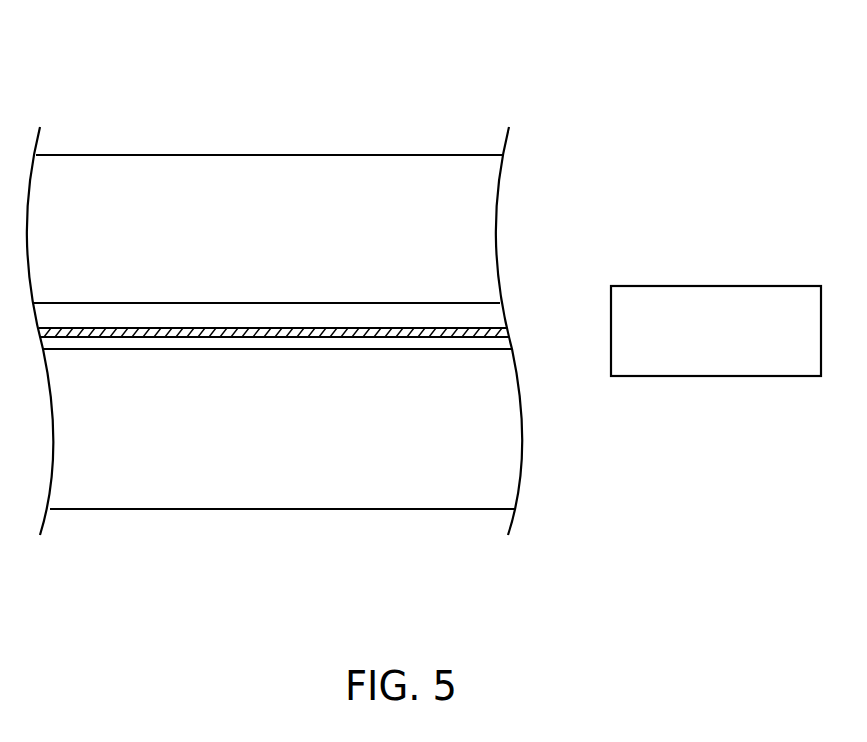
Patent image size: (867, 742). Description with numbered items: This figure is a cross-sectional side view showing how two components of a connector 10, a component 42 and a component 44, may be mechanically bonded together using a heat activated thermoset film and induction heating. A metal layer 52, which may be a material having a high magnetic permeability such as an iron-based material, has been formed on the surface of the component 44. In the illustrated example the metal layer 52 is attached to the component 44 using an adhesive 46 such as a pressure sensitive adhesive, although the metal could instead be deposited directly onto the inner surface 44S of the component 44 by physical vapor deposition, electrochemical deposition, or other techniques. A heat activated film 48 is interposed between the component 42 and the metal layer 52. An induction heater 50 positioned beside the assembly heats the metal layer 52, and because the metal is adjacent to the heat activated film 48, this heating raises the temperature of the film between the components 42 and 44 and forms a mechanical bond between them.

The connector 10 is at (410, 80).
The component 42 is at (482, 213).
The component 44 is at (508, 443).
The inner surface 44S is at (268, 350).
The adhesive 46 is at (452, 343).
The heat activated film 48 is at (128, 313).
The induction heater 50 is at (793, 362).
The metal layer 52 is at (118, 338).